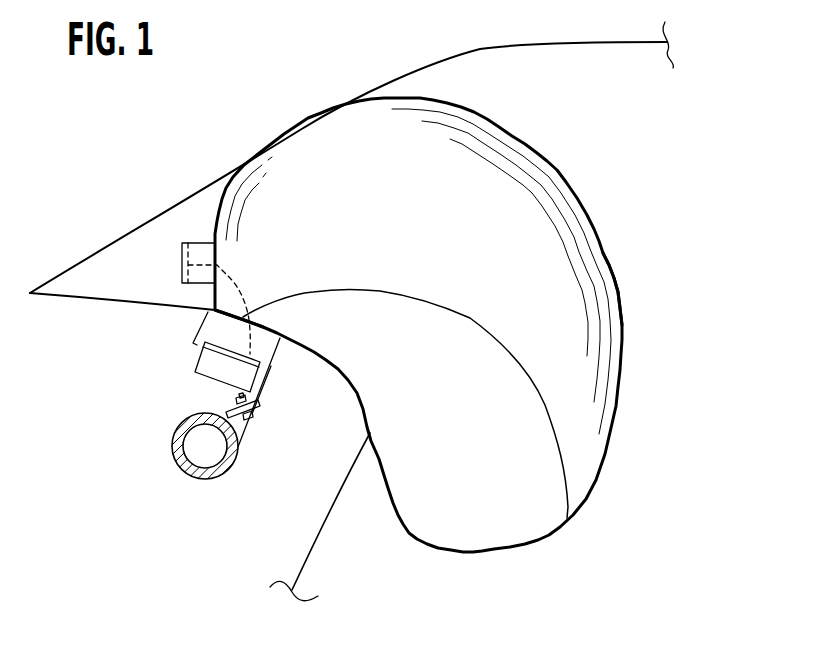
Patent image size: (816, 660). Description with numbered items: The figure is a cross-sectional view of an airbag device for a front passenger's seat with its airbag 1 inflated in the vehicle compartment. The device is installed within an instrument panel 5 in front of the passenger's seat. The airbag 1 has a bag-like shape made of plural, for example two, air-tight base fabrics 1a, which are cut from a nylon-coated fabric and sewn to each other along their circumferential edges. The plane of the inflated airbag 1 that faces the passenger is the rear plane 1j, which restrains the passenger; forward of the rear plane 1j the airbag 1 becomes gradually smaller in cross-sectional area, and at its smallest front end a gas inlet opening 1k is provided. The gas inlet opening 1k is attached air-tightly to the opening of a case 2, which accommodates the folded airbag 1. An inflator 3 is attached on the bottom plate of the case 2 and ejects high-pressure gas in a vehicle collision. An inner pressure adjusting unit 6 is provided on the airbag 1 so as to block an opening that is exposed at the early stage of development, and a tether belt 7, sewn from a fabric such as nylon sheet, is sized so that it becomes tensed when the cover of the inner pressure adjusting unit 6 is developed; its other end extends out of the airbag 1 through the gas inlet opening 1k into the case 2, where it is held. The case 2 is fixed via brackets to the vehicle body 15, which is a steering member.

The airbag 1 is at (565, 167).
The base fabrics 1a is at (528, 502).
The rear plane 1j is at (617, 288).
The gas inlet opening 1k is at (210, 314).
The case 2 is at (273, 353).
The inflator 3 is at (200, 371).
The instrument panel 5 is at (320, 552).
The inner pressure adjusting unit 6 is at (202, 253).
The tether belt 7 is at (242, 282).
The vehicle body 15 is at (202, 480).